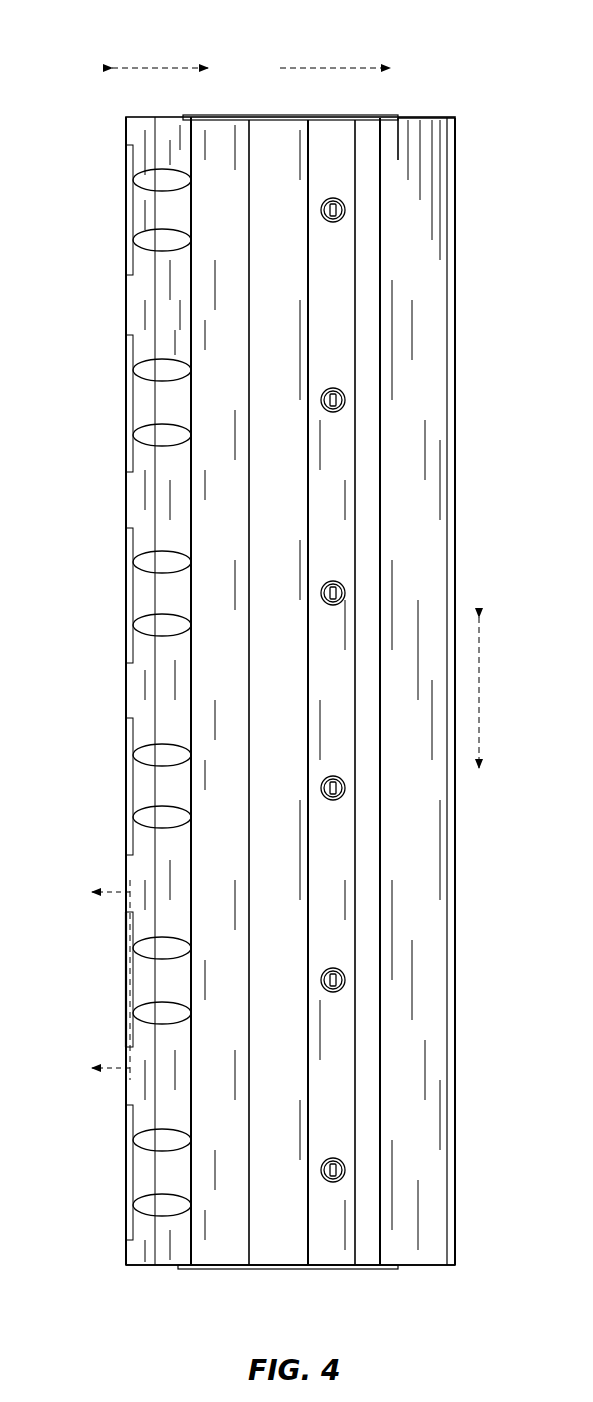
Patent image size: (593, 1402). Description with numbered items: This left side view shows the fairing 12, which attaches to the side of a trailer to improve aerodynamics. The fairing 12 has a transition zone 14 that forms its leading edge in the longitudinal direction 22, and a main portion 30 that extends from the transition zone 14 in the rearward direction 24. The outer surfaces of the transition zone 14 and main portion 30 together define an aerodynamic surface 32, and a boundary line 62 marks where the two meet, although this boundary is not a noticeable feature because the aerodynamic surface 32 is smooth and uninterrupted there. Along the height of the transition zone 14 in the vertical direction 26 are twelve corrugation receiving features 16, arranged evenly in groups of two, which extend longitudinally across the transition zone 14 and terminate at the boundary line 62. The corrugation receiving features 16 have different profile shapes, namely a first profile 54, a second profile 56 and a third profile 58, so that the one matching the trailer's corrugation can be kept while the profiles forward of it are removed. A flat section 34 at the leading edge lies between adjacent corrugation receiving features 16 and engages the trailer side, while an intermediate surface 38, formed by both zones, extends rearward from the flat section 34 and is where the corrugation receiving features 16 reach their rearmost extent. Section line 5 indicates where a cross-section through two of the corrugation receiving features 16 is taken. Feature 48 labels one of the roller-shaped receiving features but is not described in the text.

The fairing 12 is at (93, 48).
The transition zone 14 is at (137, 1250).
The corrugation receiving features 16 is at (134, 1142).
The longitudinal direction 22 is at (160, 68).
The rearward direction 24 is at (338, 68).
The vertical direction 26 is at (480, 690).
The main portion 30 is at (328, 1240).
The aerodynamic surface 32 is at (430, 292).
The flat section 34 is at (140, 690).
The intermediate surface 38 is at (196, 1240).
The roller 48 is at (158, 748).
The first profile 54 is at (125, 1010).
The second profile 56 is at (128, 947).
The third profile 58 is at (160, 948).
The boundary line 62 is at (192, 213).
The line 5- 5 is at (98, 981).